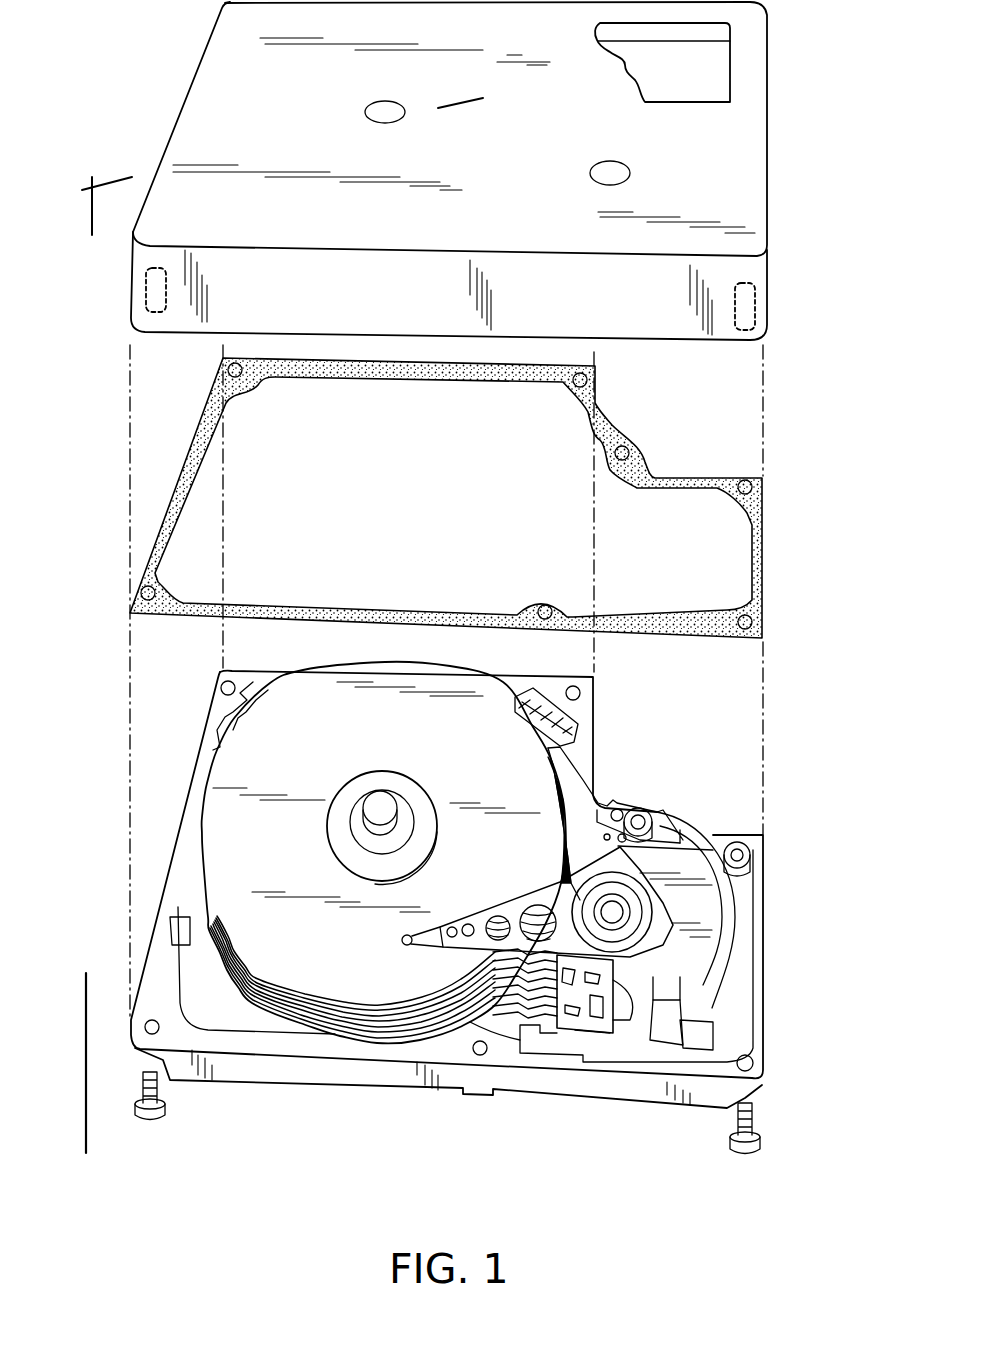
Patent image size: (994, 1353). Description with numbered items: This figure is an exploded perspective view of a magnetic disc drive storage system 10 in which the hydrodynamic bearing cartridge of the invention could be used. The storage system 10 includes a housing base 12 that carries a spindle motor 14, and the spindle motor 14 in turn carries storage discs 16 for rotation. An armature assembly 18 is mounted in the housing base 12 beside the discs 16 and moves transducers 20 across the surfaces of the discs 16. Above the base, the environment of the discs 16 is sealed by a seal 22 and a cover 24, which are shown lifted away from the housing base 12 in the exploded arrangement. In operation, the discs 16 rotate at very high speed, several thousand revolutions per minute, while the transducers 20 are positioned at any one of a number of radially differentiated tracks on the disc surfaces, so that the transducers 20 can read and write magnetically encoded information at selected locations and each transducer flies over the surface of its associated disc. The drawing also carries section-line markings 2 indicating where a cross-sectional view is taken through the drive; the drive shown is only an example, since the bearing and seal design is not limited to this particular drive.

The section line 2- 2 is at (463, 107).
The storage system 10 is at (823, 84).
The housing base 12 is at (763, 993).
The spindle motor 14 is at (357, 827).
The storage discs 16 is at (348, 1022).
The armature assembly 18 is at (512, 1022).
The transducers 20 is at (412, 942).
The seal 22 is at (762, 531).
The cover 24 is at (767, 172).